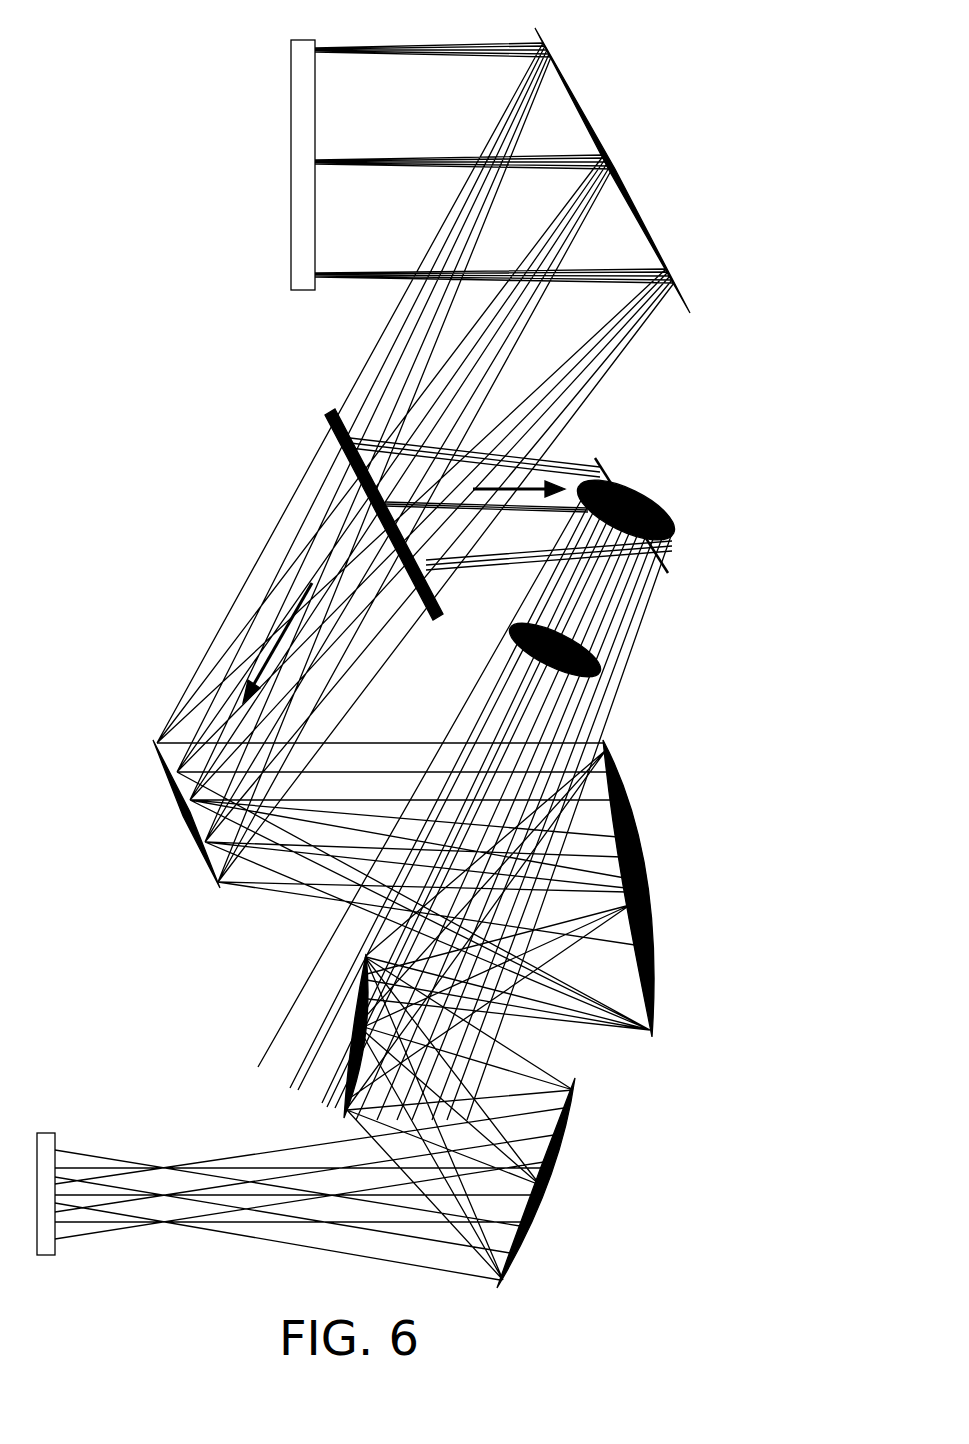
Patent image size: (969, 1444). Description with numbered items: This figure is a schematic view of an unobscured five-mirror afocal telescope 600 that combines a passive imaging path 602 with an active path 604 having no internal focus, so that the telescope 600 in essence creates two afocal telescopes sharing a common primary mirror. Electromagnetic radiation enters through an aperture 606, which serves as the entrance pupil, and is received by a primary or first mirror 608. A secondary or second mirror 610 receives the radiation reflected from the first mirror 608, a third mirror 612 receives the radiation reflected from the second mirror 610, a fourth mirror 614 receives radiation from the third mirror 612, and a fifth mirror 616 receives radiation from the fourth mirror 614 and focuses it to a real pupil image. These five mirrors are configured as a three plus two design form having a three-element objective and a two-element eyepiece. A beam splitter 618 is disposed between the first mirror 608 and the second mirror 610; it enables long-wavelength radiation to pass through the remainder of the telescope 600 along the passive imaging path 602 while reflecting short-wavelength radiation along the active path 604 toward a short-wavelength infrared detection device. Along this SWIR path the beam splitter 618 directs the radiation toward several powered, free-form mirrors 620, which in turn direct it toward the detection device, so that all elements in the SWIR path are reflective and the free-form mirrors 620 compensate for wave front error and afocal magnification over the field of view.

The unobscured five-mirror afocal telescope 600 is at (162, 178).
The passive imaging path 602 is at (278, 642).
The active path 604 is at (540, 458).
The aperture 606 is at (291, 100).
The first mirror 608 is at (595, 120).
The second mirror 610 is at (178, 797).
The third mirror 612 is at (640, 852).
The fourth mirror 614 is at (357, 1013).
The fifth mirror 616 is at (550, 1177).
The beam splitter 618 is at (350, 475).
The free-form mirrors 620 is at (655, 580).